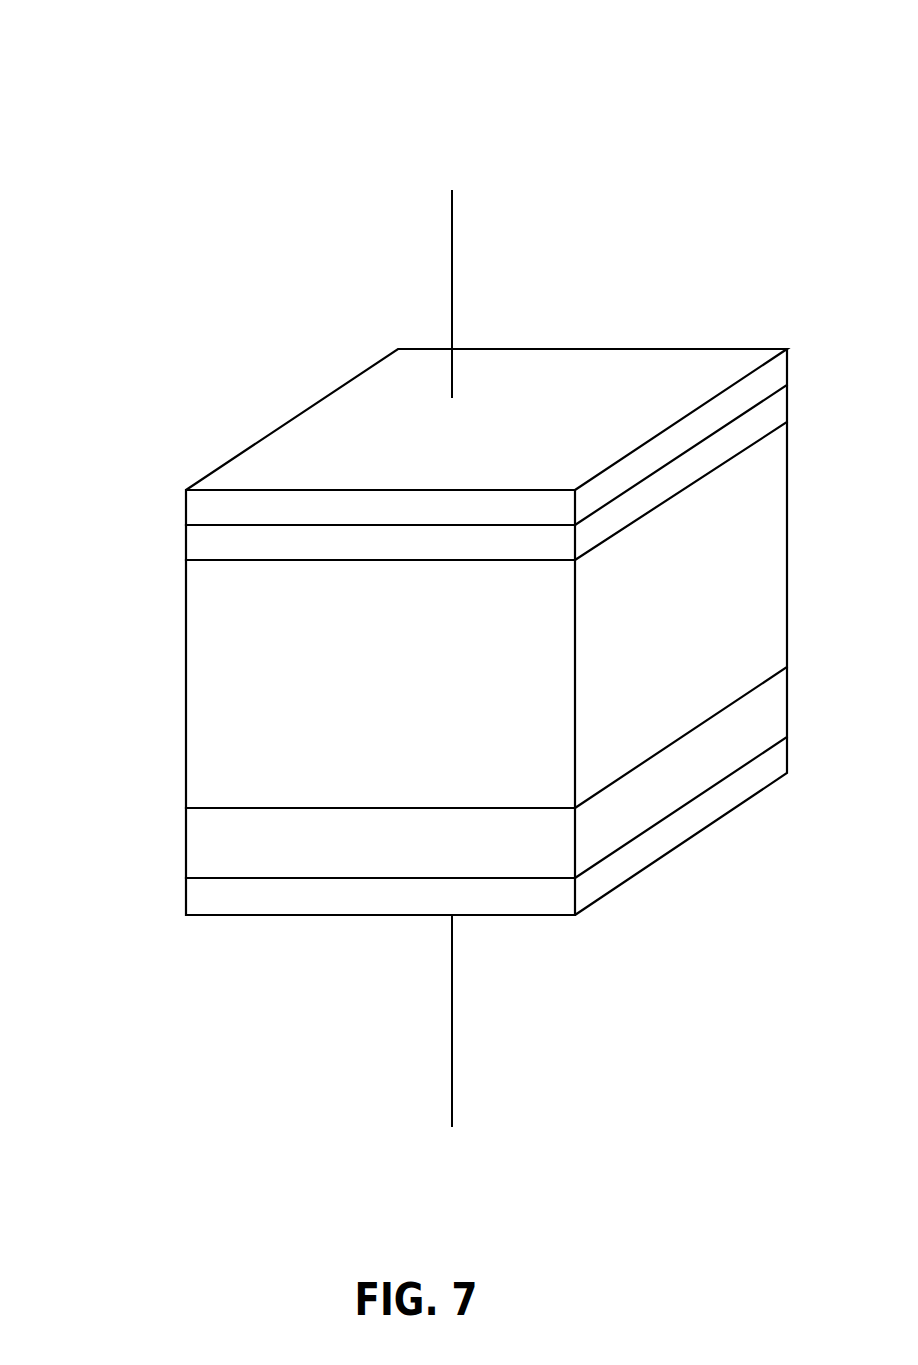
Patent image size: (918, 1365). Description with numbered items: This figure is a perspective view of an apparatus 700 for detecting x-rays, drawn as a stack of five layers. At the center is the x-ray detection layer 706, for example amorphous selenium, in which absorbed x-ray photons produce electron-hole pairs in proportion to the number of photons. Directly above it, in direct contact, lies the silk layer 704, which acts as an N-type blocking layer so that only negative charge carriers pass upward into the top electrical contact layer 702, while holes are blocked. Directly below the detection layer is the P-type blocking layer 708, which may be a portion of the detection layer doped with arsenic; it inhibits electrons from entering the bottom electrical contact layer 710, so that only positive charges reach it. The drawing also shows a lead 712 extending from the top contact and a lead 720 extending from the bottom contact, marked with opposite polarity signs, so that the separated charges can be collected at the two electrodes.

The apparatus for detecting x-rays 700 is at (147, 52).
The top electrical contact layer 702 is at (186, 505).
The silk layer 704 is at (186, 543).
The x-ray detection layer 706 is at (186, 684).
The P-type blocking layer 708 is at (186, 842).
The bottom electrical contact layer 710 is at (186, 895).
The top electrode wire (+/-) 712 is at (416, 155).
The bottom electrode wire (-/+) 720 is at (415, 1143).